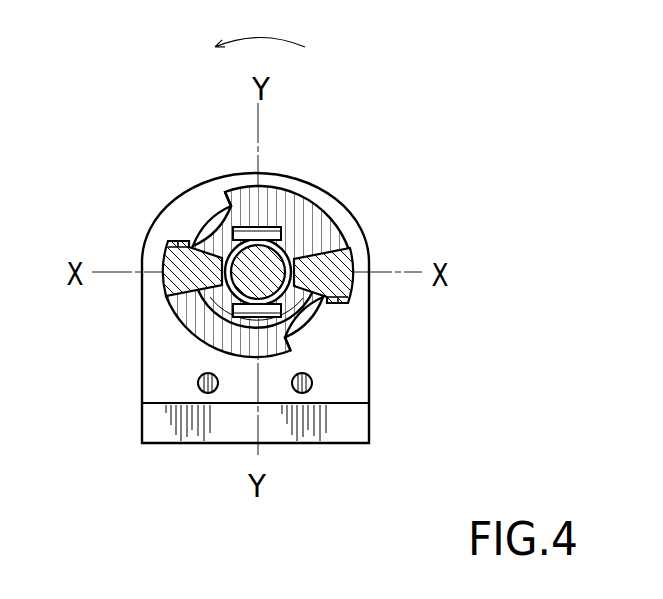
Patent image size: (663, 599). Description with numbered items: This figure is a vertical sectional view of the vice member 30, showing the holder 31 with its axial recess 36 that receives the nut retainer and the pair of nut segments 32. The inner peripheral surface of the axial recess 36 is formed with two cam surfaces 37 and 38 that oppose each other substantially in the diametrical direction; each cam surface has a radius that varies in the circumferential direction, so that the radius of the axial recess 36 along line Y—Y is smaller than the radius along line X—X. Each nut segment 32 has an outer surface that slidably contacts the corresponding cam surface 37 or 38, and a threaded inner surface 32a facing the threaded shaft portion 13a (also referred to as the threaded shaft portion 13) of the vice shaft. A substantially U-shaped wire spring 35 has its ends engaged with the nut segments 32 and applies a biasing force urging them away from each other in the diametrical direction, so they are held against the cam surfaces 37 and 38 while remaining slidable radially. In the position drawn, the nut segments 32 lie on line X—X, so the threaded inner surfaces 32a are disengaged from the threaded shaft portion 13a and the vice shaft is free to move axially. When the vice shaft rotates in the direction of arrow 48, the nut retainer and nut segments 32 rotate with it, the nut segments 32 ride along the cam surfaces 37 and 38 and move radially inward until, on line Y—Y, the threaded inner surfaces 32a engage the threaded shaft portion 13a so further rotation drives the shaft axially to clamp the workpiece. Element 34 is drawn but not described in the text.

The vice member 30 is at (395, 98).
The holder 31 is at (333, 432).
The axial recess 36 is at (199, 386).
The threaded shaft portion 13 is at (330, 336).
The threaded shaft portion 13a is at (226, 196).
The wire spring 35 is at (307, 318).
The cam surface 38 is at (190, 327).
The nut segments 32 is at (168, 265).
The threaded inner surfaces 32a is at (175, 240).
The cam surface 37 is at (282, 202).
The seal members 34 is at (283, 228).
The arrow 48 is at (260, 24).